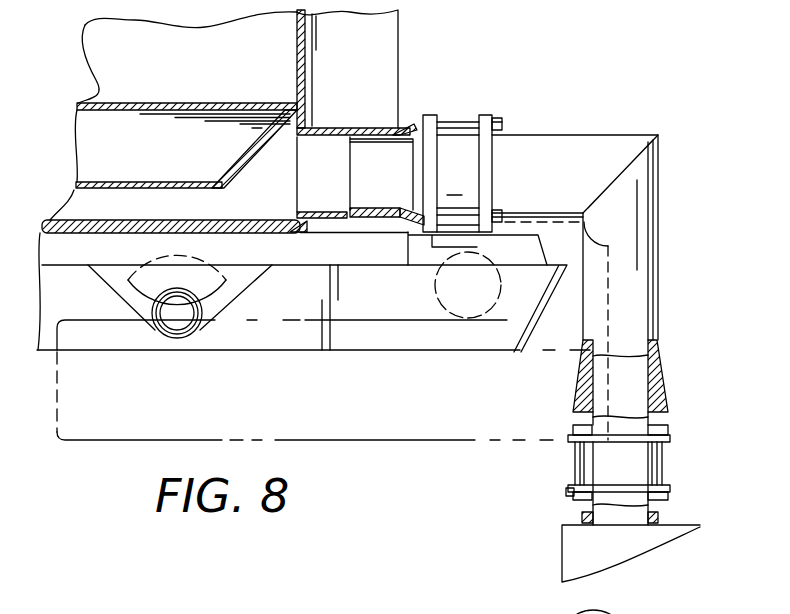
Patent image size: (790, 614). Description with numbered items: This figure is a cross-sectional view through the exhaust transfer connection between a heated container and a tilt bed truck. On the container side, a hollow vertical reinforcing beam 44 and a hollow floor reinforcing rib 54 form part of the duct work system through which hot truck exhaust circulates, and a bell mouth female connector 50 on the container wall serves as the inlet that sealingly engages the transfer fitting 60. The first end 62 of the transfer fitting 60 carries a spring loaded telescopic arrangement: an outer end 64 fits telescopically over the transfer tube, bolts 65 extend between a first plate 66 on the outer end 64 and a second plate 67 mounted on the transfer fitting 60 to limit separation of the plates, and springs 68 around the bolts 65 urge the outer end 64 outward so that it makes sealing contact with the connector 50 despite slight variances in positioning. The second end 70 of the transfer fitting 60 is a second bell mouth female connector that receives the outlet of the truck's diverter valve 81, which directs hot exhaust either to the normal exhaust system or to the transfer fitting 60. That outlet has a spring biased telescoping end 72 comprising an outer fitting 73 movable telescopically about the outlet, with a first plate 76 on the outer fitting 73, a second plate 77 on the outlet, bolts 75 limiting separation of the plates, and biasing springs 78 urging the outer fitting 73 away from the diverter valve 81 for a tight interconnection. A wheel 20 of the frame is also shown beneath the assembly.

The wheel 20 is at (204, 343).
The vertical reinforcing beam 44 is at (322, 43).
The bell mouth female connector 50 is at (367, 100).
The reinforcing rib 54 is at (70, 205).
The transfer fitting 60 is at (583, 140).
The first end of transfer fitting 62 is at (458, 108).
The outer end 64 is at (423, 157).
The bolts 65 is at (500, 123).
The first plate 66 is at (430, 168).
The second plate 67 is at (485, 162).
The springs 68 is at (470, 122).
The second end of transfer fitting 70 is at (662, 392).
The spring biased telescoping end 72 is at (673, 498).
The outer fitting 73 is at (588, 377).
The bolts 75 is at (572, 422).
The first plate 76 is at (592, 447).
The second plate 77 is at (572, 490).
The biasing springs 78 is at (577, 467).
The diverter valve 81 is at (663, 540).